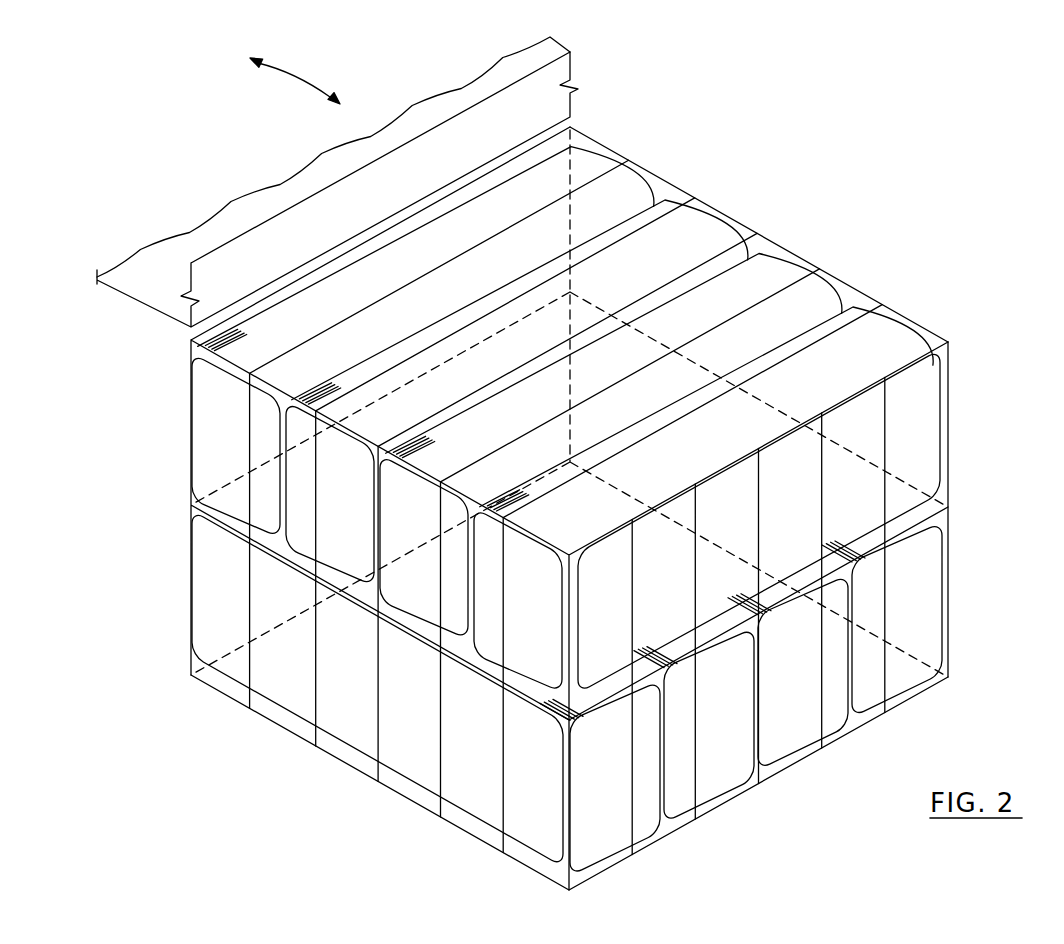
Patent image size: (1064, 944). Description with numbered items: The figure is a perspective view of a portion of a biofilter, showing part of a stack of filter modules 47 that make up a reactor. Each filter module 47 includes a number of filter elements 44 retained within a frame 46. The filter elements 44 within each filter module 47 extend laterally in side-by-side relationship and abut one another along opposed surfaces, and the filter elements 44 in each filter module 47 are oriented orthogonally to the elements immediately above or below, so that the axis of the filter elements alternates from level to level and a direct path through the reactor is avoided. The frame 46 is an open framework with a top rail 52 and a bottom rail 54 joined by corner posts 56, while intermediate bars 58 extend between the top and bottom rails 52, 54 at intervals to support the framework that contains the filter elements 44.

The filter element 44 is at (523, 509).
The frame 46 is at (177, 605).
The filter module 47 is at (570, 52).
The top rail 52 is at (845, 277).
The bottom rail 54 is at (392, 793).
The corner post 56 is at (950, 437).
The intermediate bar 58 is at (440, 722).